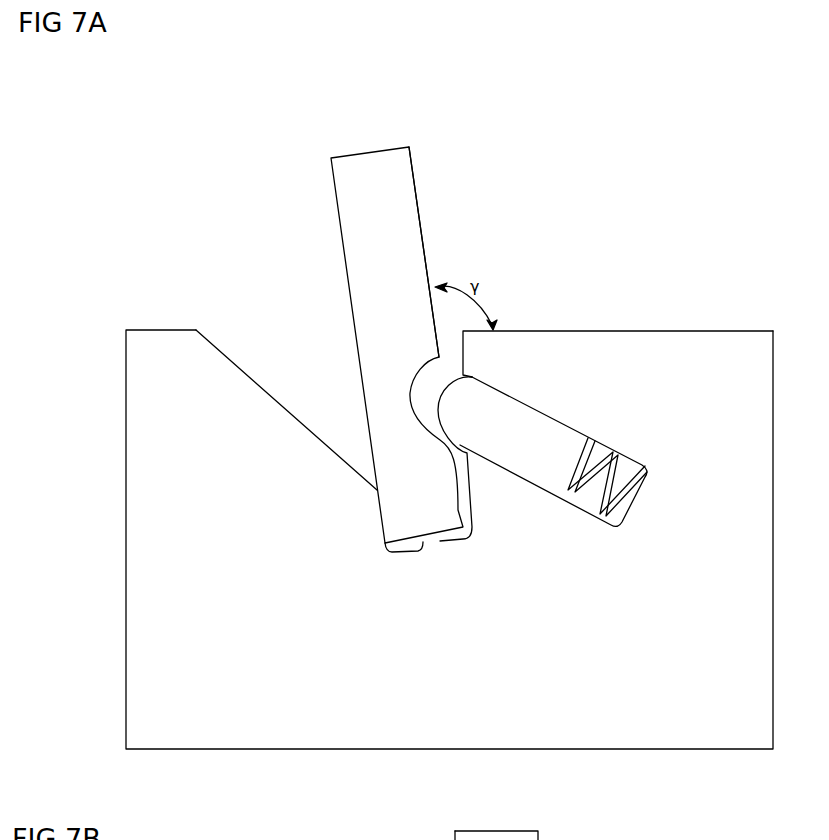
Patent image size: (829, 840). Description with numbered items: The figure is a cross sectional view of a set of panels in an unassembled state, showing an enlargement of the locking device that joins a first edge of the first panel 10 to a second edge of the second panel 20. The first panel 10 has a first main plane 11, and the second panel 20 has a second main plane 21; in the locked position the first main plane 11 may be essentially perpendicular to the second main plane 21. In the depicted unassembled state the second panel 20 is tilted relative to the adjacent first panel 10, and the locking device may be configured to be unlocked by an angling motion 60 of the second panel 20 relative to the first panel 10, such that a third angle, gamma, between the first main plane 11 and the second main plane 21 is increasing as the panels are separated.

The first panel 10 is at (718, 706).
The first main plane 11 is at (715, 332).
The second panel 20 is at (377, 226).
The second main plane 21 is at (418, 200).
The angling motion 60 is at (472, 125).